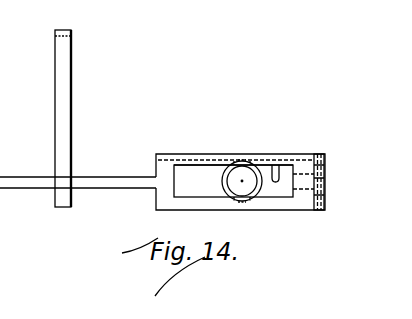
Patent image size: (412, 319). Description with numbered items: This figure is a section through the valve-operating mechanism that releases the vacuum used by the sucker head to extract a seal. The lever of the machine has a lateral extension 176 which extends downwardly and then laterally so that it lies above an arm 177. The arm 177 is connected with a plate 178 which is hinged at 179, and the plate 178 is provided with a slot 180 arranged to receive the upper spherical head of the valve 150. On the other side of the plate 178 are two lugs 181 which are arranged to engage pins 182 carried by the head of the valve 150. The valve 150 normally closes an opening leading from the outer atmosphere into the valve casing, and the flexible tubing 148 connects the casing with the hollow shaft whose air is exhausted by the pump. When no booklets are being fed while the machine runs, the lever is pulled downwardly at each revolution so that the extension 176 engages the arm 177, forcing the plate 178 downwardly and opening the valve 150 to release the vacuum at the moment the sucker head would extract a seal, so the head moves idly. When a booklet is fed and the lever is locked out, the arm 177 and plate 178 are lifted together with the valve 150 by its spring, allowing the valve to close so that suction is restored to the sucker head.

The lateral extension 176 is at (61, 34).
The arm 177 is at (123, 178).
The slot 180 is at (184, 166).
The valve 150 is at (226, 182).
The lugs 181 is at (256, 168).
The pins 182 is at (243, 161).
The plate 178 is at (274, 165).
The flexible tubing 148 is at (287, 165).
The hinge 179 is at (323, 154).